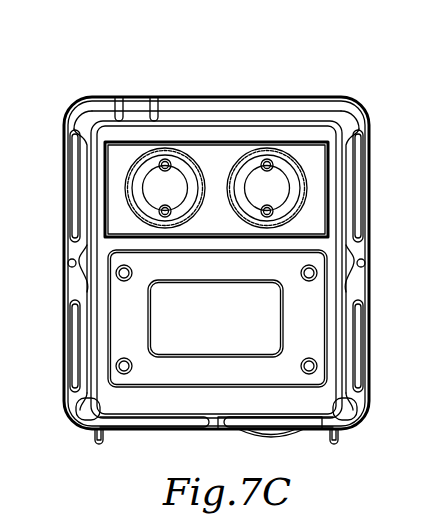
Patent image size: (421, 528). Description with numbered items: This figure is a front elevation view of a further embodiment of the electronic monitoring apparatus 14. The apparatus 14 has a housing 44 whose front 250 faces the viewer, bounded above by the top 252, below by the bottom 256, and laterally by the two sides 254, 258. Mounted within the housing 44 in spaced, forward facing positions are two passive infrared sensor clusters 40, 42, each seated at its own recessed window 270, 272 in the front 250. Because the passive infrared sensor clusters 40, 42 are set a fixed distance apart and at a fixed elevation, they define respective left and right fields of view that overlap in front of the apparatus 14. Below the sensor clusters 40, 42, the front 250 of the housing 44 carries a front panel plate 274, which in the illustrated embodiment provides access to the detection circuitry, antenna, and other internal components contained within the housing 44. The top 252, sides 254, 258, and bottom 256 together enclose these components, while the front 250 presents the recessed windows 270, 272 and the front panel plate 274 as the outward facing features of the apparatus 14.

The electronic monitoring apparatus 14 is at (331, 91).
The top 252 is at (222, 95).
The side 254 is at (357, 222).
The bottom 256 is at (133, 431).
The side 258 is at (80, 209).
The front 250 is at (270, 405).
The passive infrared sensor cluster 40 is at (176, 196).
The passive infrared sensor cluster 42 is at (278, 196).
The recessed window 270 is at (150, 180).
The recessed window 272 is at (282, 180).
The housing 44 is at (127, 310).
The front panel plate 274 is at (189, 376).